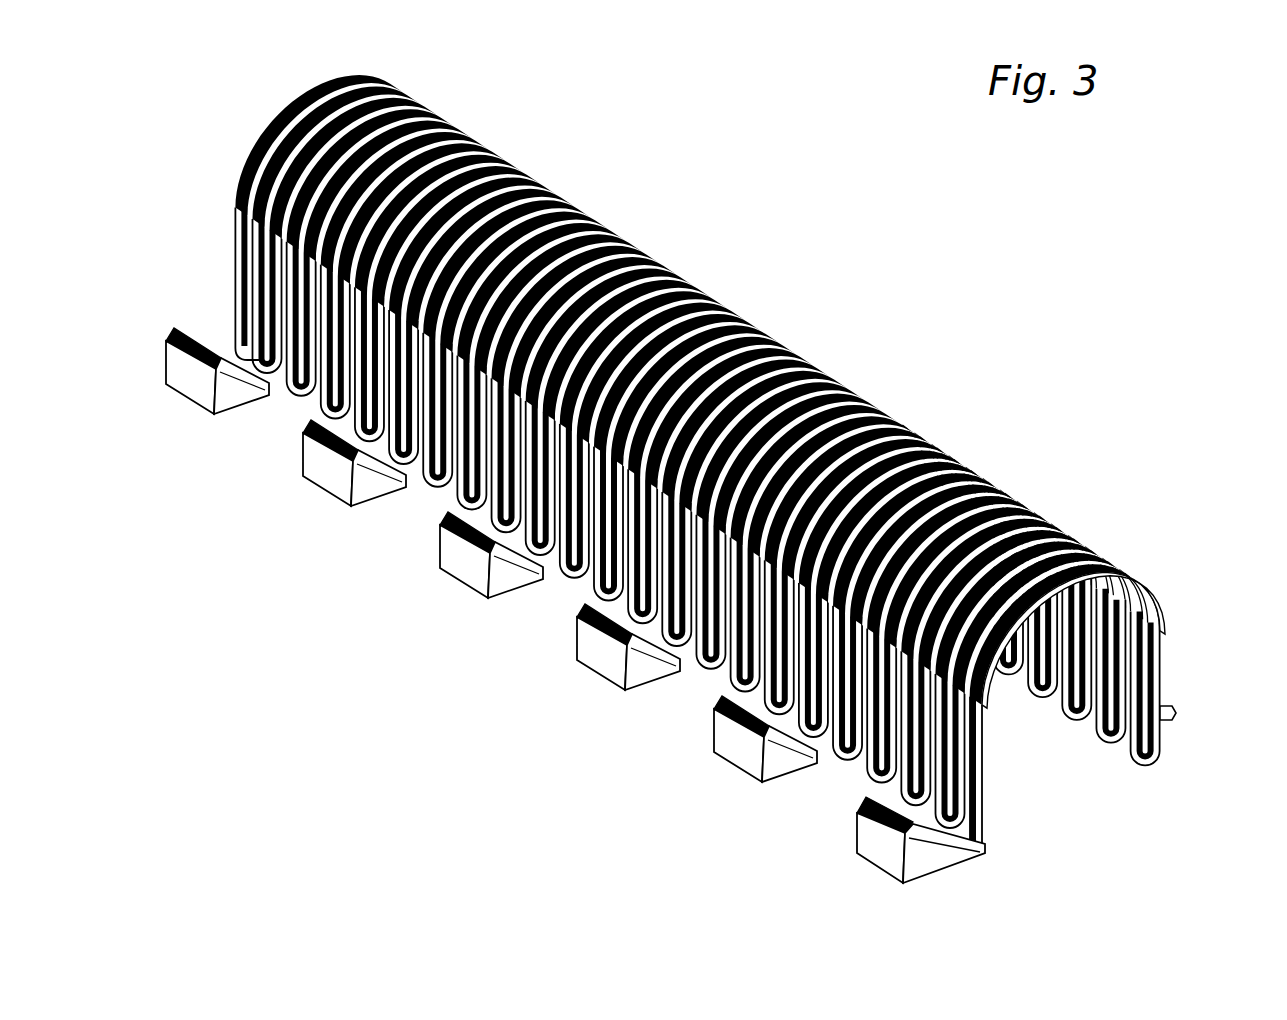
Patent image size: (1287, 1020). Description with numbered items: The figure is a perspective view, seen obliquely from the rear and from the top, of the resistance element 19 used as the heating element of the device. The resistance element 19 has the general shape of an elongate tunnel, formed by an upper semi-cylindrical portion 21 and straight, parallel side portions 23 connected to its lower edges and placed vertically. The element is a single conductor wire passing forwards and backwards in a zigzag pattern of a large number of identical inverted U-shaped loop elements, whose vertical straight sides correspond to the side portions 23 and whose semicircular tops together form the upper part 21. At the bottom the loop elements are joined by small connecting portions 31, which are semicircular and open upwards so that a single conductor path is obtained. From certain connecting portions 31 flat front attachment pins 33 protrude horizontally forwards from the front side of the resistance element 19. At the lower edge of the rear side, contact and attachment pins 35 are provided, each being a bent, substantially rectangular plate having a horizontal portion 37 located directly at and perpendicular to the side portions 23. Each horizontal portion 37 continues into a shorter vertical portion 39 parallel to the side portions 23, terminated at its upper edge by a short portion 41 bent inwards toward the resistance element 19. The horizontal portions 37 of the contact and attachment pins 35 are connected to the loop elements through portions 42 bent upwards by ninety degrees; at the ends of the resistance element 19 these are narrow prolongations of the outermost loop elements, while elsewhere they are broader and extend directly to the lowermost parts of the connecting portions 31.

The resistance element 19 is at (822, 288).
The upper semi-cylindrical portion 21 is at (1125, 578).
The side portions 23 is at (1168, 665).
The connecting portions 31 is at (848, 766).
The front attachment pins 33 is at (1172, 712).
The rear contact and attachment pins 35 is at (698, 771).
The horizontal portion 37 is at (645, 665).
The vertical portion 39 is at (600, 652).
The short portion bent inwards 41 is at (580, 612).
The portions bent upwards 42 is at (985, 846).